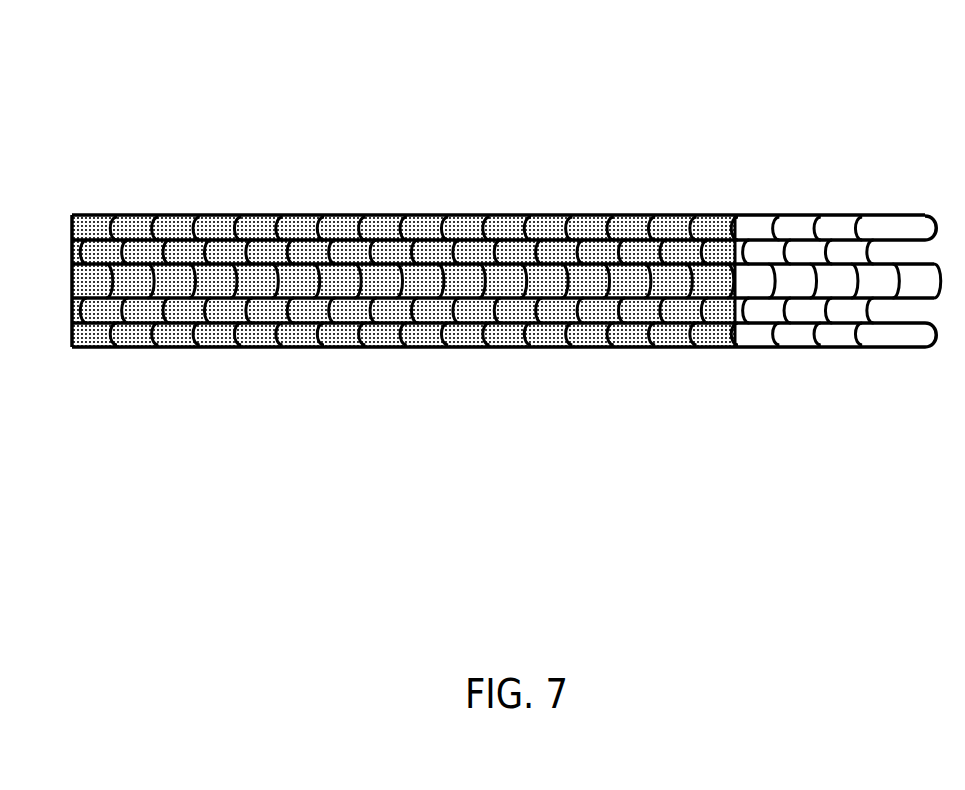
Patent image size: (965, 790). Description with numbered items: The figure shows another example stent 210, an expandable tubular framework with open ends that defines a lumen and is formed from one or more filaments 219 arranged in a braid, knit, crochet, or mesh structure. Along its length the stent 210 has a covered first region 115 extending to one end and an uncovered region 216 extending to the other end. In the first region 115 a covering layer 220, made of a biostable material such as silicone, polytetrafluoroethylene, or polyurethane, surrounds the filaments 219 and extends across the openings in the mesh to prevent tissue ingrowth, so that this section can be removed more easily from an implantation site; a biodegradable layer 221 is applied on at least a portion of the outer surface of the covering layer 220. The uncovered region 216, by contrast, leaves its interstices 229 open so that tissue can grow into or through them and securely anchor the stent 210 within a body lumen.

The stent 210 is at (531, 100).
The first region 115 is at (733, 362).
The uncovered region 216 is at (947, 198).
The covering layer 220 is at (147, 247).
The biodegradable layer 221 is at (337, 320).
The filament 219 is at (168, 322).
The interstices 229 is at (756, 310).